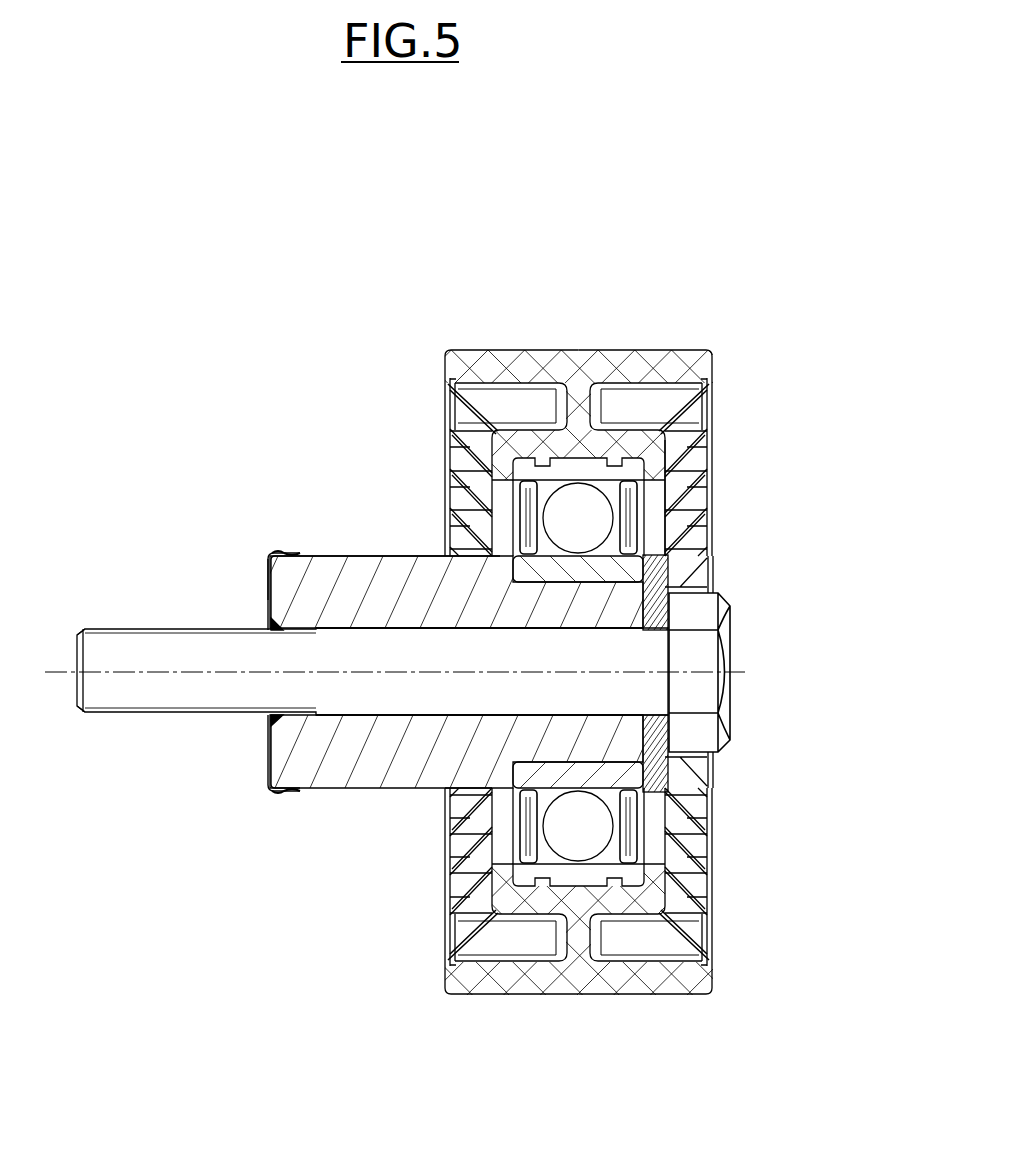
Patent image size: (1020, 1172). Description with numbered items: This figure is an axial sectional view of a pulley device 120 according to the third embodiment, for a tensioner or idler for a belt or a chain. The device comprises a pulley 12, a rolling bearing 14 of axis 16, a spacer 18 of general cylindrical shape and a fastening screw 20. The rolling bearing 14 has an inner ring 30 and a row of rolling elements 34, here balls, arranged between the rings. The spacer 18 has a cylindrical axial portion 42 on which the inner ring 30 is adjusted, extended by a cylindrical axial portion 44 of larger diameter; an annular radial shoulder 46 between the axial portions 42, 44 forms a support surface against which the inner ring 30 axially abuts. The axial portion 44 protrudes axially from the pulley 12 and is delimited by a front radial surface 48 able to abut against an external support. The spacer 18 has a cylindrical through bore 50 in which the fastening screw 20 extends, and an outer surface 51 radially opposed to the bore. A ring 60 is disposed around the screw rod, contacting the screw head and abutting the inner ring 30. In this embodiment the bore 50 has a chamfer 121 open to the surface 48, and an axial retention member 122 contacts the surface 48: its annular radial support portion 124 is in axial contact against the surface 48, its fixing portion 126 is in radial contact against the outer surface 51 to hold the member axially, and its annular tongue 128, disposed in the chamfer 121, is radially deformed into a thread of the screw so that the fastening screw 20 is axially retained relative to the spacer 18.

The pulley device 120 is at (636, 293).
The pulley 12 is at (694, 348).
The rolling bearing 14 is at (647, 511).
The axis 16 is at (54, 670).
The spacer 18 is at (366, 554).
The fastening screw 20 is at (105, 716).
The inner ring 30 is at (547, 560).
The rolling elements 34 is at (566, 529).
The cylindrical axial portion 42 is at (700, 745).
The cylindrical axial portion of larger diameter 44 is at (333, 790).
The annular radial shoulder 46 is at (470, 803).
The front radial surface 48 is at (270, 592).
The cylindrical through bore 50 is at (383, 697).
The outer surface 51 is at (303, 790).
The ring 60 is at (660, 580).
The chamfer 121 is at (264, 716).
The axial retention member 122 is at (272, 551).
The annular radial support portion 124 is at (268, 568).
The fixing portion 126 is at (296, 553).
The annular tongue 128 is at (266, 628).